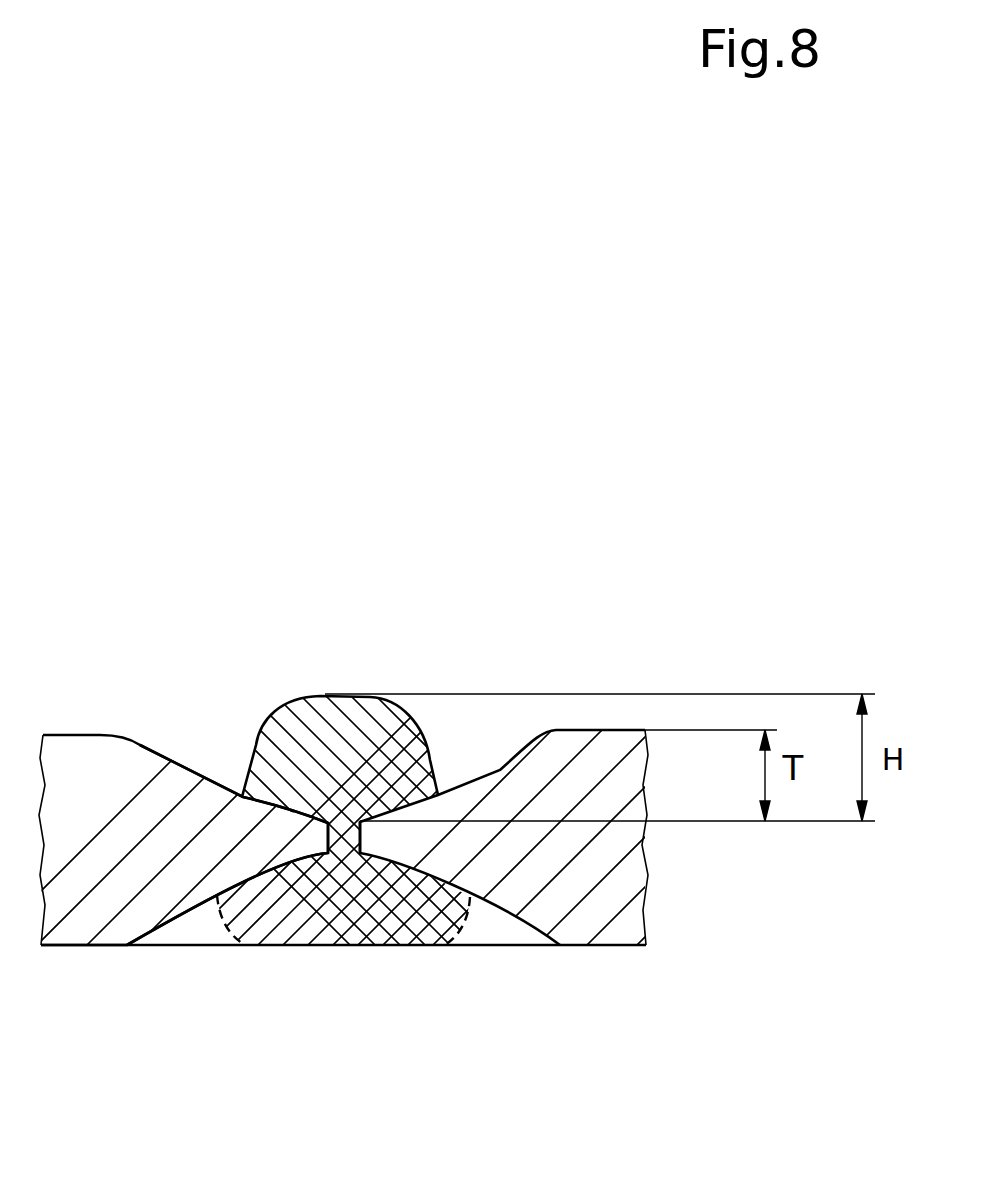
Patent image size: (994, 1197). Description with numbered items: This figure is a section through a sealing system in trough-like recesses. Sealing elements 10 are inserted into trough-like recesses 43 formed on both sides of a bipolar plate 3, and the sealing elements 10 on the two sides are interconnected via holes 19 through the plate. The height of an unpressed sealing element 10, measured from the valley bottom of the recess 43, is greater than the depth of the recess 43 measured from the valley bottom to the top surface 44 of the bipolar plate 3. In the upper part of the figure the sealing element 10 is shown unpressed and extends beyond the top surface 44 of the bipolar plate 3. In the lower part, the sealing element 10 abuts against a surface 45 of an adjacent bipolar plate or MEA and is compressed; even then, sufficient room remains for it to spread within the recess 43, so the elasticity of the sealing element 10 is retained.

The top surface 44 is at (85, 735).
The trough-like recess 43 is at (223, 772).
The sealing element 10 is at (345, 735).
The hole 19 is at (343, 838).
The surface 45 is at (488, 943).
The bipolar plate 3 is at (590, 920).